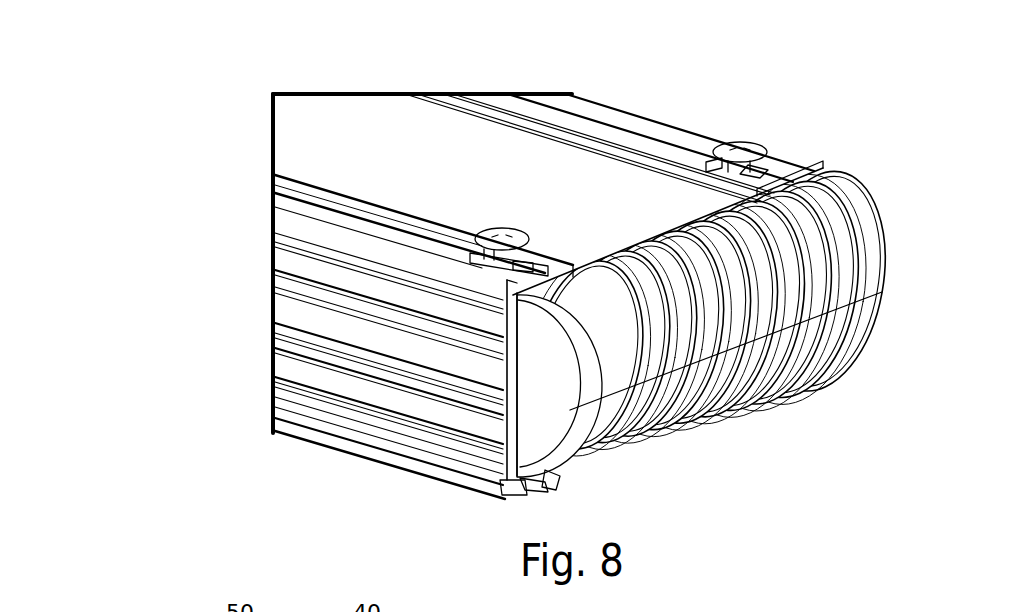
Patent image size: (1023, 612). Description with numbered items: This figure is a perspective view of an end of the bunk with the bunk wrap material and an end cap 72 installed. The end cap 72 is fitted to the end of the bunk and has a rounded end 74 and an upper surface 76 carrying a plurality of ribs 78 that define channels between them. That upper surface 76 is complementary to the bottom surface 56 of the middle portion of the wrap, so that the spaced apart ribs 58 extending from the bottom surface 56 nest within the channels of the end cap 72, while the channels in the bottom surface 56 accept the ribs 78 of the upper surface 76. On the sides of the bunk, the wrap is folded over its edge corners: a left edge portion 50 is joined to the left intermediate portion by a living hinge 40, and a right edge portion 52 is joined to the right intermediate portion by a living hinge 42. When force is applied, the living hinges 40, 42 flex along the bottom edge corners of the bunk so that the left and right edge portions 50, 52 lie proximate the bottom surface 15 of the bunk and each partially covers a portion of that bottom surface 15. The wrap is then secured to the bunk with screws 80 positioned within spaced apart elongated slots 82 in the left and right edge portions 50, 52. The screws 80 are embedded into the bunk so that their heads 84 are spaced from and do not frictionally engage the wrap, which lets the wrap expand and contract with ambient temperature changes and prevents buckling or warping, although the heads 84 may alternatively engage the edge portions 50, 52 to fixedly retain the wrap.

The bottom surface 15 is at (541, 176).
The living hinge 40 is at (360, 238).
The living hinge 42 is at (825, 164).
The left edge portion 50 is at (312, 200).
The right edge portion 52 is at (653, 120).
The bottom surface 56 is at (533, 490).
The ribs 58 is at (505, 498).
The end cap 72 is at (890, 292).
The rounded end 74 is at (700, 390).
The upper surface 76 is at (553, 487).
The ribs 78 is at (585, 474).
The screws 80 is at (748, 138).
The elongated slots 82 is at (527, 265).
The heads 84 is at (500, 234).